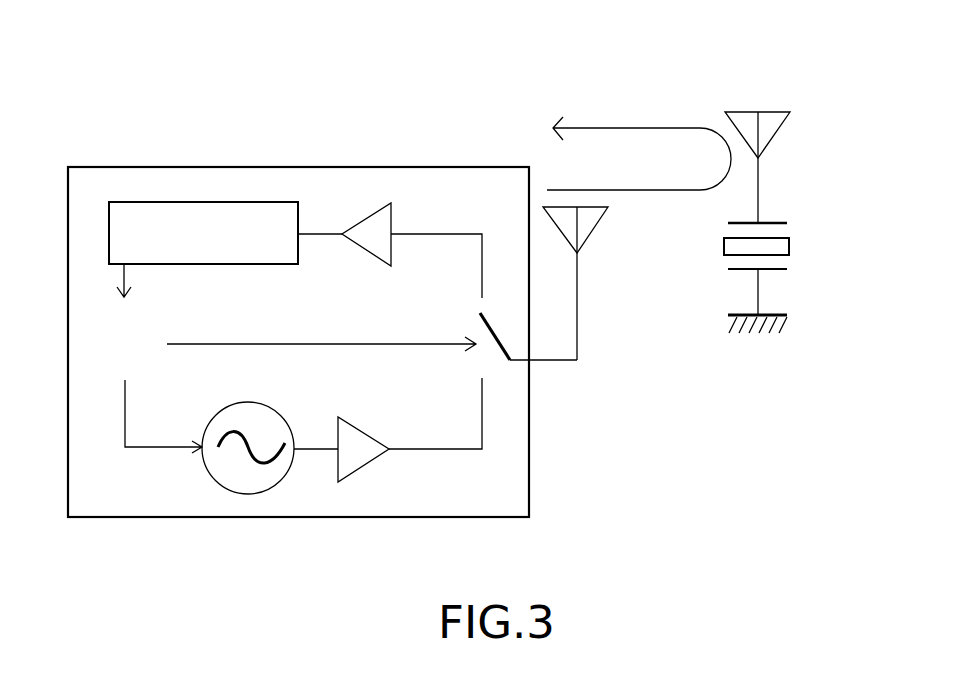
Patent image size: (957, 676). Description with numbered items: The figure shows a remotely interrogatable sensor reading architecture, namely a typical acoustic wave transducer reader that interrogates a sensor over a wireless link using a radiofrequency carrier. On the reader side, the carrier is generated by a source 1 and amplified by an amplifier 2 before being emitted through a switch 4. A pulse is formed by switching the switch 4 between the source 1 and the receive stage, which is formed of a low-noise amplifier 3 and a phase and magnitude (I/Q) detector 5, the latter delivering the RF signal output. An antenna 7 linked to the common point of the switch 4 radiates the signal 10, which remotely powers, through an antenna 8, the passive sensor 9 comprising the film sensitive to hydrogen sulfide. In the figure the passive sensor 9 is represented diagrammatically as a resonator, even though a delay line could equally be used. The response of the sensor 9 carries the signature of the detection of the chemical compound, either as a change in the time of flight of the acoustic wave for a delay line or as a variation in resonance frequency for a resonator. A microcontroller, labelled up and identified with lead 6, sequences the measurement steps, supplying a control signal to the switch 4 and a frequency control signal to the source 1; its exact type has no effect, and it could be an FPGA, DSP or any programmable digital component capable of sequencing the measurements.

The source 1 is at (282, 413).
The amplifier 2 is at (367, 463).
The low-noise amplifier 3 is at (392, 212).
The switch 4 is at (495, 347).
The phase and magnitude (I/Q) detector 5 is at (109, 227).
The control unit 6 is at (106, 355).
The antenna 7 is at (597, 228).
The antenna 8 is at (778, 137).
The passive sensor 9 is at (723, 258).
The signal 10 is at (630, 120).